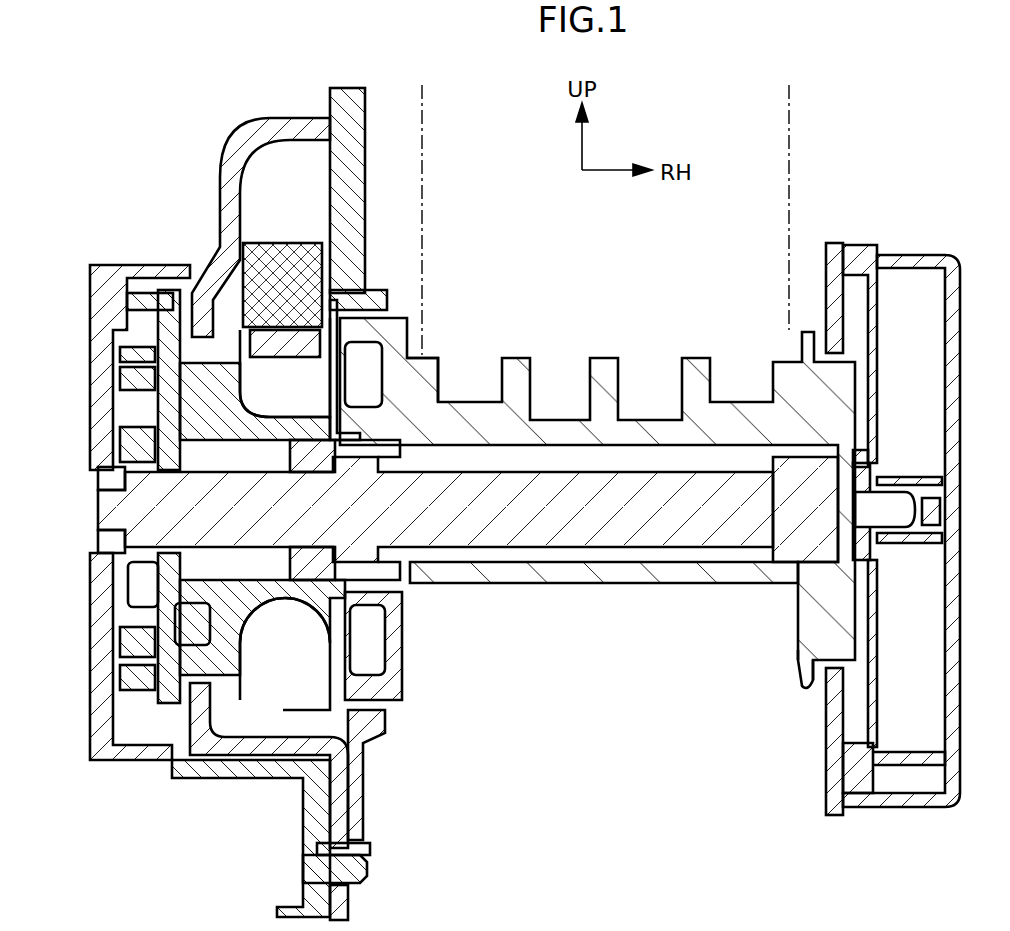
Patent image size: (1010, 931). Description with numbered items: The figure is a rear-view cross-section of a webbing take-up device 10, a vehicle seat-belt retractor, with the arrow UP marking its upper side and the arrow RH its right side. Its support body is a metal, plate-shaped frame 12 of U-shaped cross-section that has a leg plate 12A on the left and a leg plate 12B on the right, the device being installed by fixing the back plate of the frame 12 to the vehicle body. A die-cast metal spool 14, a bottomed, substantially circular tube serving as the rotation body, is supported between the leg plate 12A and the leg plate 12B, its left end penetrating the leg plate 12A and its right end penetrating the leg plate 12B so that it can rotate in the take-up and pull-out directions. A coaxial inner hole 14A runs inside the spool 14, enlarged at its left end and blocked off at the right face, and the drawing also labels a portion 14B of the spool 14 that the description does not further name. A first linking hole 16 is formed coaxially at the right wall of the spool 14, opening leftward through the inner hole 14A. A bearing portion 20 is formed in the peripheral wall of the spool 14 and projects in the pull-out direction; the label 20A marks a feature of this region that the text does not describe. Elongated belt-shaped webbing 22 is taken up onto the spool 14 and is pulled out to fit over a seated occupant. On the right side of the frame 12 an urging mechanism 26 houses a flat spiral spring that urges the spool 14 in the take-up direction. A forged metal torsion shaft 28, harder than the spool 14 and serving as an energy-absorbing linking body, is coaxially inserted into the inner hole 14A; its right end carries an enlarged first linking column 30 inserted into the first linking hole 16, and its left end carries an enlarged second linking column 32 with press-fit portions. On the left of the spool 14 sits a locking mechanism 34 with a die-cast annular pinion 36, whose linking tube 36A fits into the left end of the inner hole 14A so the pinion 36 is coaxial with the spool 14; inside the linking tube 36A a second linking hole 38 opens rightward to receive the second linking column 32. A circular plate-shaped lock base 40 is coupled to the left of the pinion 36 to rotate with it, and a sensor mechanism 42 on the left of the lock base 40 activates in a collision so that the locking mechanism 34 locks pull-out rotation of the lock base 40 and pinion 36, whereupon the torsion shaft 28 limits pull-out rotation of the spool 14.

The webbing take-up device 10 is at (174, 122).
The frame 12 is at (835, 243).
The leg plate 12A is at (347, 163).
The leg plate 12B is at (840, 303).
The spool 14 is at (597, 493).
The inner hole 14A is at (538, 555).
The heat sink lower plate 14B is at (670, 585).
The first linking hole 16 is at (805, 548).
The bearing portion 20 is at (734, 682).
The circuit board projection 20A is at (800, 630).
The webbing 22 is at (422, 140).
The urging mechanism 26 is at (955, 258).
The torsion shaft 28 is at (602, 548).
The first linking column 30 is at (800, 453).
The second linking column 32 is at (437, 395).
The locking mechanism 34 is at (213, 810).
The pinion 36 is at (313, 418).
The linking tube 36A is at (372, 600).
The second linking hole 38 is at (400, 552).
The lock base 40 is at (242, 672).
The sensor mechanism 42 is at (125, 292).